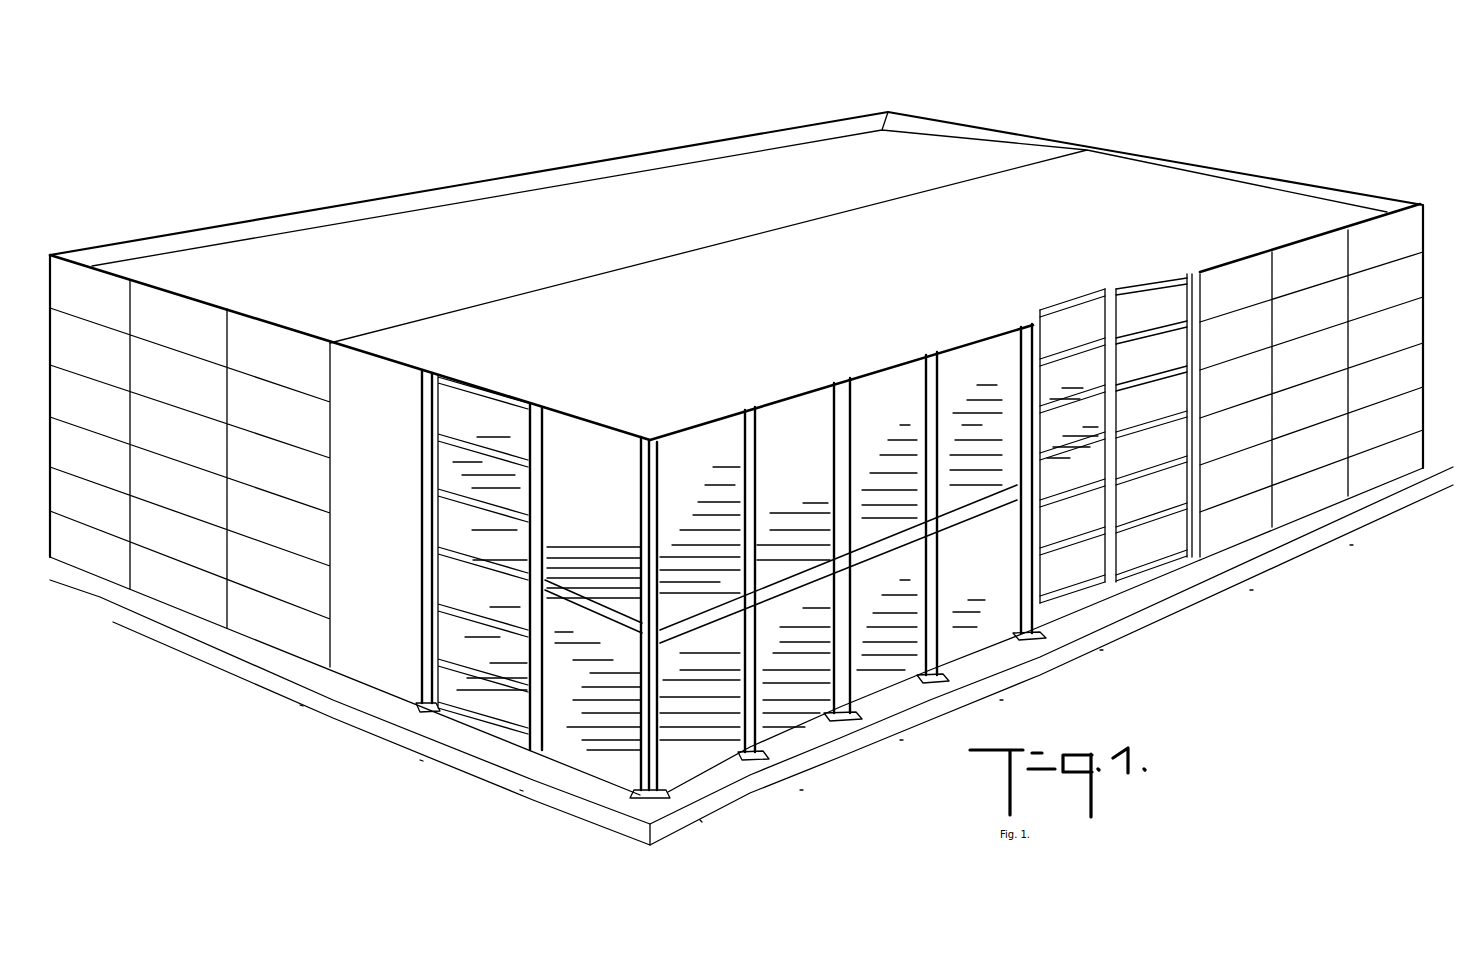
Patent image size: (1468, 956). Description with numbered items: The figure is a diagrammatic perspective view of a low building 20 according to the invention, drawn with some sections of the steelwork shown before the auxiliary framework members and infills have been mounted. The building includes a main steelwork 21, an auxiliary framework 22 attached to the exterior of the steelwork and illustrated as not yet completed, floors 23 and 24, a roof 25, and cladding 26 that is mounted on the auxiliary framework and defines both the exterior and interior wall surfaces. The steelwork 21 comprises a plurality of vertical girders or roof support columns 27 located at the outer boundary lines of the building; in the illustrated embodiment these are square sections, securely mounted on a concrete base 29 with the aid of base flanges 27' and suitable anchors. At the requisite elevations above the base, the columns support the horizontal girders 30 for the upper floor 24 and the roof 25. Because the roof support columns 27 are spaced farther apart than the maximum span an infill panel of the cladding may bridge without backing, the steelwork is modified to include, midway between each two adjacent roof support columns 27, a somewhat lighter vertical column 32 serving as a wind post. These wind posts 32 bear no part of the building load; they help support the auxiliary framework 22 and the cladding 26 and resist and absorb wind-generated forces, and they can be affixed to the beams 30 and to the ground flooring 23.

The low building 20 is at (1256, 152).
The main steelwork 21 is at (899, 689).
The auxiliary framework 22 is at (1130, 333).
The ground flooring 23 is at (609, 744).
The upper floor 24 is at (623, 578).
The roof 25 is at (822, 313).
The cladding 26 is at (248, 606).
The vertical girders or roof support columns 27 is at (574, 593).
The base flanges 27' is at (681, 831).
The concrete base 29 is at (306, 700).
The horizontal girders 30 is at (795, 568).
The vertical column (wind post) 32 is at (548, 450).